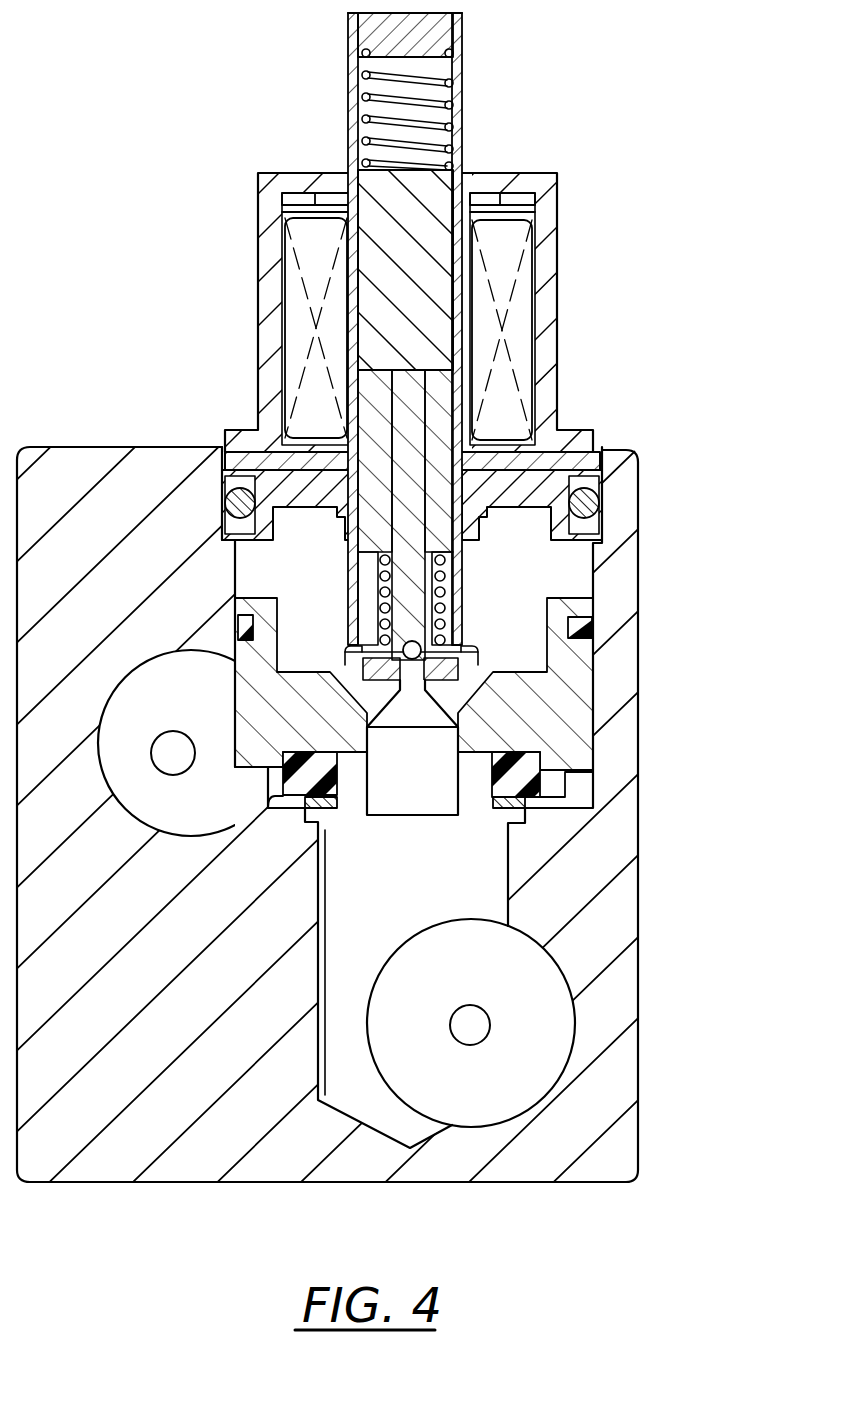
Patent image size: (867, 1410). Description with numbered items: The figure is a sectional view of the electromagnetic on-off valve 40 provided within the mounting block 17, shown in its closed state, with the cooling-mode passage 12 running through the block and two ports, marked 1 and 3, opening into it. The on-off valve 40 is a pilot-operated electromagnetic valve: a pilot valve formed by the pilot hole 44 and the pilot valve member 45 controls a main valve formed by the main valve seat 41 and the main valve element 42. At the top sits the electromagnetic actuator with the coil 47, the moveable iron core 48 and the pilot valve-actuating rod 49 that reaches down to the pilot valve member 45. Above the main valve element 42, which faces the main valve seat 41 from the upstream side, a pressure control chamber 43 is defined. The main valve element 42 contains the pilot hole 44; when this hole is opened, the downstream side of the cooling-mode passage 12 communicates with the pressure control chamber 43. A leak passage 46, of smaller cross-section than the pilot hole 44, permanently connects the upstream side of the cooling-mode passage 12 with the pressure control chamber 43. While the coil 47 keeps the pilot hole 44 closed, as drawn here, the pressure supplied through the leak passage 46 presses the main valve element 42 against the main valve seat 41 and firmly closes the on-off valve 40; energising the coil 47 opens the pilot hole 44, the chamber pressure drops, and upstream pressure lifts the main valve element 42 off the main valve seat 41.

The electromagnetic on-off valve 40 is at (212, 299).
The moveable iron core 48 is at (438, 262).
The coil 47 is at (523, 307).
The pilot valve-actuating rod 49 is at (417, 413).
The pressure control chamber 43 is at (568, 557).
The pilot valve member 45 is at (420, 645).
The leak passage 46 is at (347, 692).
The pilot hole 44 is at (420, 676).
The main valve element 42 is at (570, 738).
The main valve seat 41 is at (527, 812).
The cooling-mode passage 12 is at (518, 978).
The mounting block 17 is at (350, 705).
The port 1 is at (173, 753).
The port 3 is at (470, 1025).